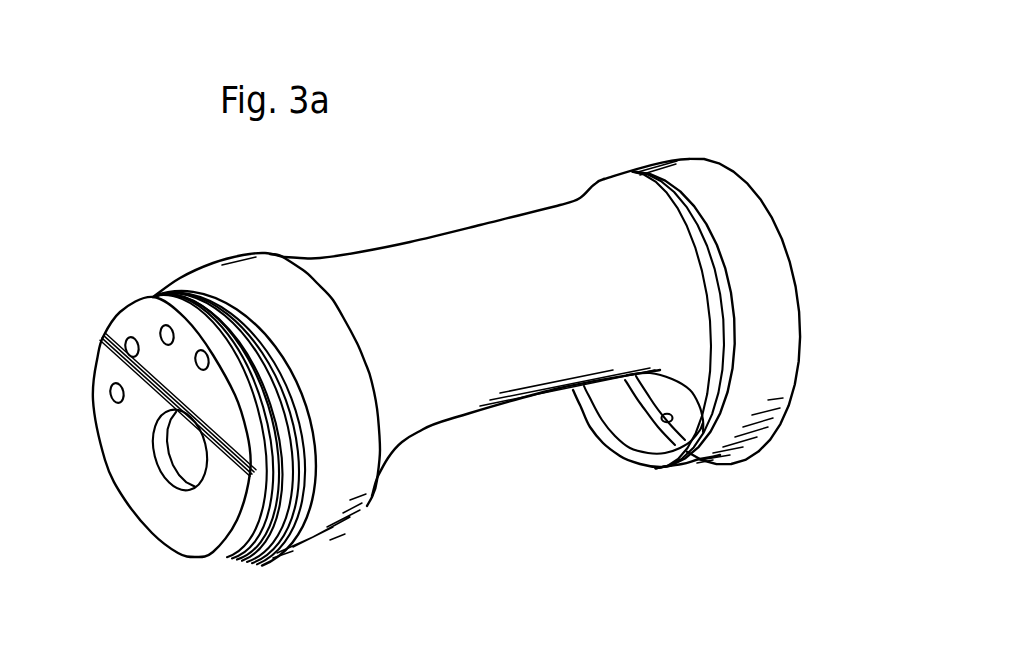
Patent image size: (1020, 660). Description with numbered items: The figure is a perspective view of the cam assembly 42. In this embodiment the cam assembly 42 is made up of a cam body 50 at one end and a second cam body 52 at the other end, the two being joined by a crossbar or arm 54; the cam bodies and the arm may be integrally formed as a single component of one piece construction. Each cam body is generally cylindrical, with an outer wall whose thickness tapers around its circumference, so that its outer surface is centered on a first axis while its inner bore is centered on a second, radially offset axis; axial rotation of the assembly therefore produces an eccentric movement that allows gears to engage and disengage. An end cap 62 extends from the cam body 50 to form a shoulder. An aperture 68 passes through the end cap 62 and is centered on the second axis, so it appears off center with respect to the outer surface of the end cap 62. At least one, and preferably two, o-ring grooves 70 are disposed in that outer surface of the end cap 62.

The cam assembly 42 is at (746, 164).
The cam body 50 is at (242, 258).
The cam body 52 is at (718, 460).
The crossbar or arm 54 is at (474, 398).
The end cap 62 is at (150, 286).
The aperture 68 is at (168, 463).
The o-ring grooves 70 is at (268, 477).